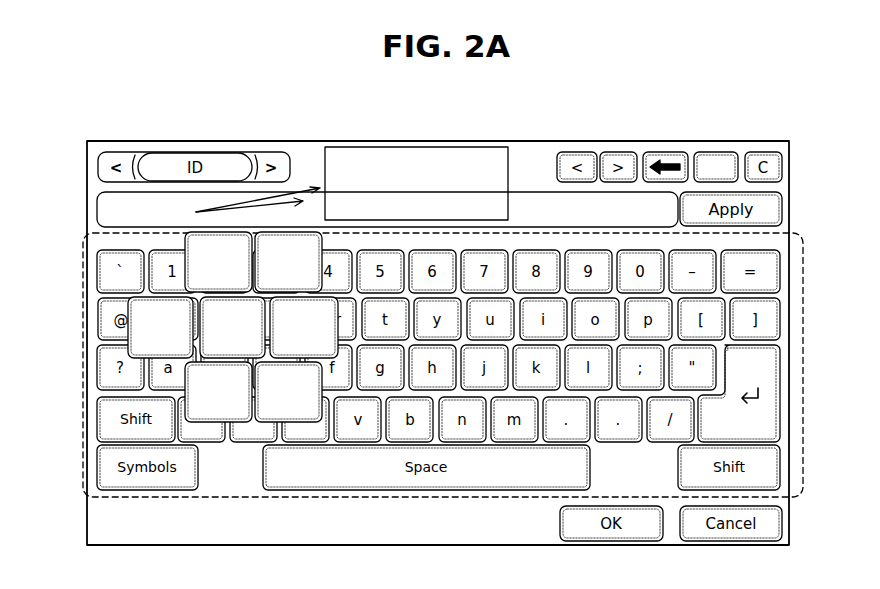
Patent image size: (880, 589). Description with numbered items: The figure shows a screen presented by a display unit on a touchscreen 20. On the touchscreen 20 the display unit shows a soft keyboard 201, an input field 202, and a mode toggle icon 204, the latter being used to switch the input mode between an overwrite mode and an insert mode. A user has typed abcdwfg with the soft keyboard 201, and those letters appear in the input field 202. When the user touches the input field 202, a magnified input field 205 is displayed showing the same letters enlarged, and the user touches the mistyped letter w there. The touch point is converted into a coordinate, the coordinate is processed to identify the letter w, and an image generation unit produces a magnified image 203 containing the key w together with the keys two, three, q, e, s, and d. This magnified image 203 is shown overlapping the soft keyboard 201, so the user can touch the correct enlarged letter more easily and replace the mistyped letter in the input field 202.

The touchscreen 20 is at (97, 141).
The soft keyboard 201 is at (797, 229).
The input field 202 is at (537, 206).
The magnified image 203 is at (188, 268).
The mode toggle icon 204 is at (719, 157).
The magnified input field 205 is at (440, 146).